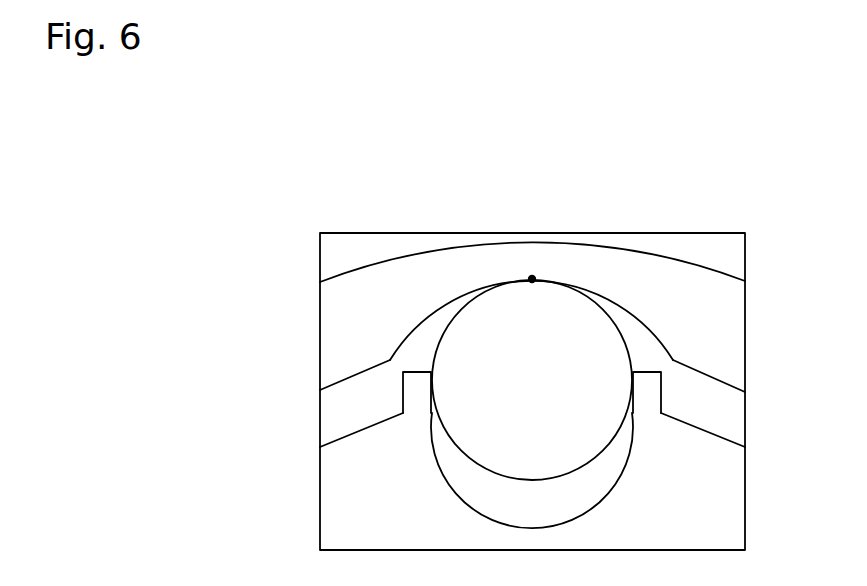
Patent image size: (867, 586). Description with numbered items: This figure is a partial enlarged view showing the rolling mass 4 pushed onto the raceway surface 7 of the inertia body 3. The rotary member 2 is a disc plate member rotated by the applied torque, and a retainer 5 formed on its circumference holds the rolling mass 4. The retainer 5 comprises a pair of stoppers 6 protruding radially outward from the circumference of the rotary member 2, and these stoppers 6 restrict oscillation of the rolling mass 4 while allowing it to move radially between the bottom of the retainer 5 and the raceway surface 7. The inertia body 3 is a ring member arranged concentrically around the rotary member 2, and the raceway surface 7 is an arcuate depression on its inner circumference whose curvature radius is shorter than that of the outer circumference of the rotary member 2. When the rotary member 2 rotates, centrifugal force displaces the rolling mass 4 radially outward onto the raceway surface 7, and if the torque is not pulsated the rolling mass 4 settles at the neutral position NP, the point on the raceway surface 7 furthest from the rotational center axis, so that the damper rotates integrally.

The rotary member 2 is at (733, 532).
The inertia body 3 is at (733, 302).
The rolling mass 4 is at (587, 312).
The retainer 5 is at (668, 404).
The stopper 6 is at (410, 394).
The raceway surface 7 is at (548, 289).
The neutral position NP is at (532, 275).